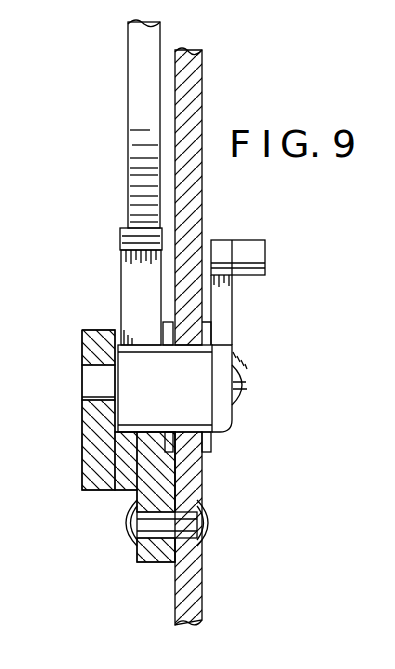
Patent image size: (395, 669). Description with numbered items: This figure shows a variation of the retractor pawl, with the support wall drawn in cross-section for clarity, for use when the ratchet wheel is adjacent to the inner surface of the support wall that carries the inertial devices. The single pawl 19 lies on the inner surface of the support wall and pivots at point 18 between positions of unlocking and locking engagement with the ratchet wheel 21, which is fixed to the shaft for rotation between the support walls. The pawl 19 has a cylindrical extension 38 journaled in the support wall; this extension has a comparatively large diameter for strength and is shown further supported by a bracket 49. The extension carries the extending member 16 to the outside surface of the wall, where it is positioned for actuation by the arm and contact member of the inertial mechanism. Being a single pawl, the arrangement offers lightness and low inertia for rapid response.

The extending member 16 is at (248, 258).
The pivot point 18 is at (185, 433).
The pawl 19 is at (135, 288).
The ratchet wheel 21 is at (135, 148).
The cylindrical extension 38 is at (178, 396).
The bracket 49 is at (97, 468).